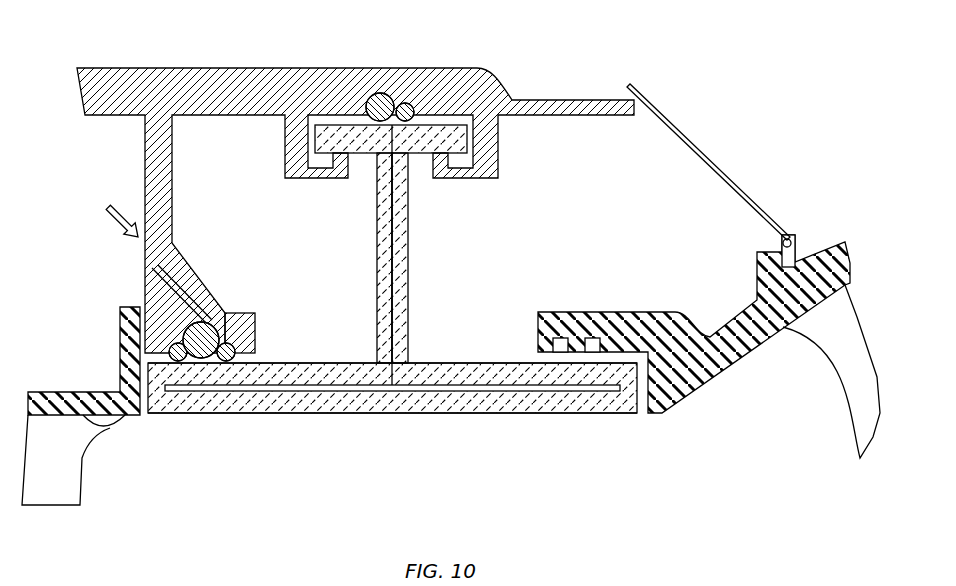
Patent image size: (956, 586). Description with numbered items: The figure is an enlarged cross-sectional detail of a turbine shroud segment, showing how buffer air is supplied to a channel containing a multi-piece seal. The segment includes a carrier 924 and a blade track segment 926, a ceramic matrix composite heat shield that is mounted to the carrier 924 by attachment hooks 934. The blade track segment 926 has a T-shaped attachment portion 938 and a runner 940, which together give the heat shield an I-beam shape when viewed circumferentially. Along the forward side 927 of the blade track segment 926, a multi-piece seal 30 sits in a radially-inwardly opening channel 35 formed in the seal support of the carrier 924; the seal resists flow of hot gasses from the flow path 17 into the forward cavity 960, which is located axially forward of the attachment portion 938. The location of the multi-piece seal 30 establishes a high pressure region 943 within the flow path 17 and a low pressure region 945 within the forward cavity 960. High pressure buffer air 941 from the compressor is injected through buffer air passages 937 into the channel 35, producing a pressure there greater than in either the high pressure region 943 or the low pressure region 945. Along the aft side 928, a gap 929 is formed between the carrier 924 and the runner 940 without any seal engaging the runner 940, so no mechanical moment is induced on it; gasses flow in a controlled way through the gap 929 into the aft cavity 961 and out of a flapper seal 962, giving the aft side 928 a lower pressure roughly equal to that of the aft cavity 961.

The flow path 17 is at (310, 512).
The multi-piece seal 30 is at (172, 331).
The radially-inwardly opening channel 35 is at (235, 318).
The carrier 924 is at (140, 137).
The blade track segment 926 is at (518, 470).
The forward side 927 is at (190, 421).
The aft side 928 is at (619, 421).
The gap 929 is at (653, 425).
The attachment hooks 934 is at (282, 143).
The buffer air passages 937 is at (160, 277).
The T-shaped attachment portion 938 is at (422, 158).
The runner 940 is at (433, 356).
The high pressure buffer air 941 is at (128, 205).
The high pressure region 943 is at (115, 413).
The low pressure region 945 is at (319, 309).
The forward cavity 960 is at (289, 245).
The aft cavity 961 is at (585, 225).
The flapper seal 962 is at (732, 150).